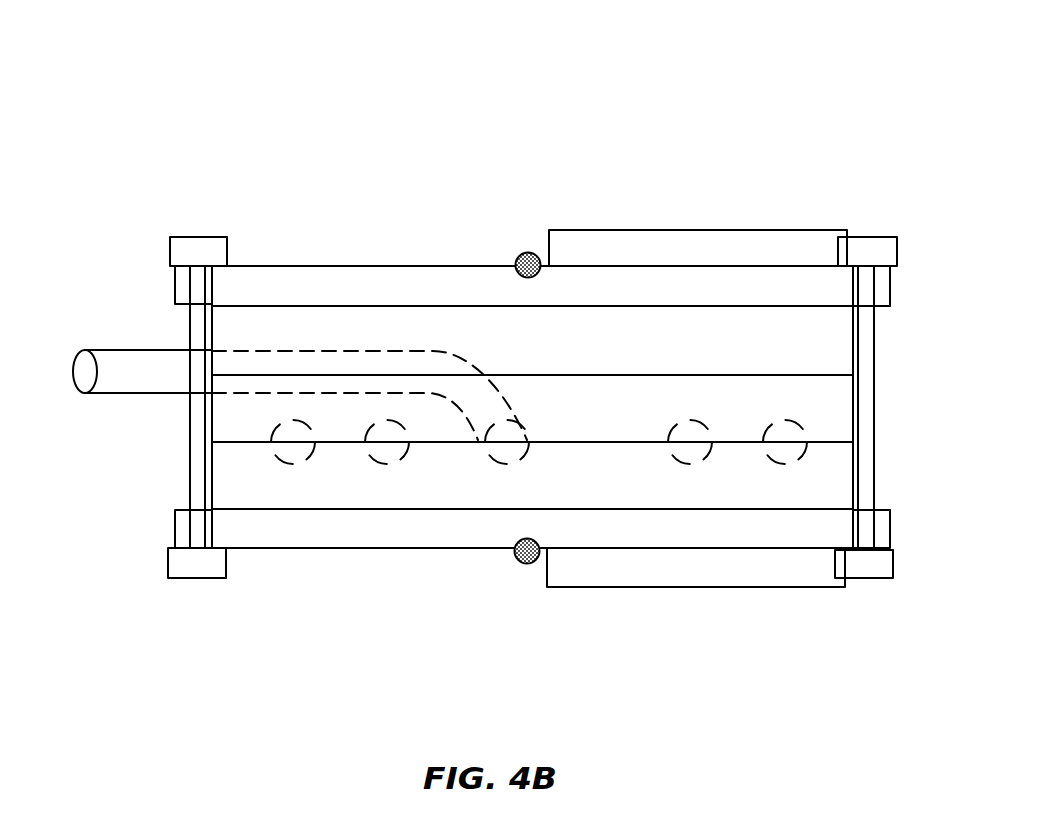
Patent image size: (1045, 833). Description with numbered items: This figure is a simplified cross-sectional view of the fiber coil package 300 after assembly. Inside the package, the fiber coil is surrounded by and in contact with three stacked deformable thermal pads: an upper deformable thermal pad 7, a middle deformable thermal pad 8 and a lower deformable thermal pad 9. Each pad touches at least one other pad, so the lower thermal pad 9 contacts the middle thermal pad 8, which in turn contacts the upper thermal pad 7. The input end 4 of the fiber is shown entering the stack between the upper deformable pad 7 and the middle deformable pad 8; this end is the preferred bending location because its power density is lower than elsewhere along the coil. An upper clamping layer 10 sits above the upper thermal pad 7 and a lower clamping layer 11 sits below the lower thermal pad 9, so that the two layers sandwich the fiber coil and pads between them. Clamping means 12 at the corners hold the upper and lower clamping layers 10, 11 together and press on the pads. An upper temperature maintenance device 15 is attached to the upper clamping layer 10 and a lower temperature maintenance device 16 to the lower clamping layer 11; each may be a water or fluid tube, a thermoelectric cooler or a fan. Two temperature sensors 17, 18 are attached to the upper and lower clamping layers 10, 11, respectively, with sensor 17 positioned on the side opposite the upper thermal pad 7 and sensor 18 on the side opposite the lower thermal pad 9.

The fiber coil package 300 is at (770, 55).
The input end of the fiber coil 4 is at (101, 350).
The upper deformable thermal pad 7 is at (245, 327).
The middle deformable thermal pad 8 is at (240, 425).
The lower deformable thermal pad 9 is at (245, 490).
The upper clamping layer 10 is at (173, 283).
The lower clamping layer 11 is at (173, 530).
The clamping means 12 is at (165, 565).
The upper temperature maintenance device 15 is at (732, 228).
The lower temperature maintenance device 16 is at (723, 590).
The temperature sensor 17 is at (526, 253).
The temperature sensor 18 is at (524, 565).